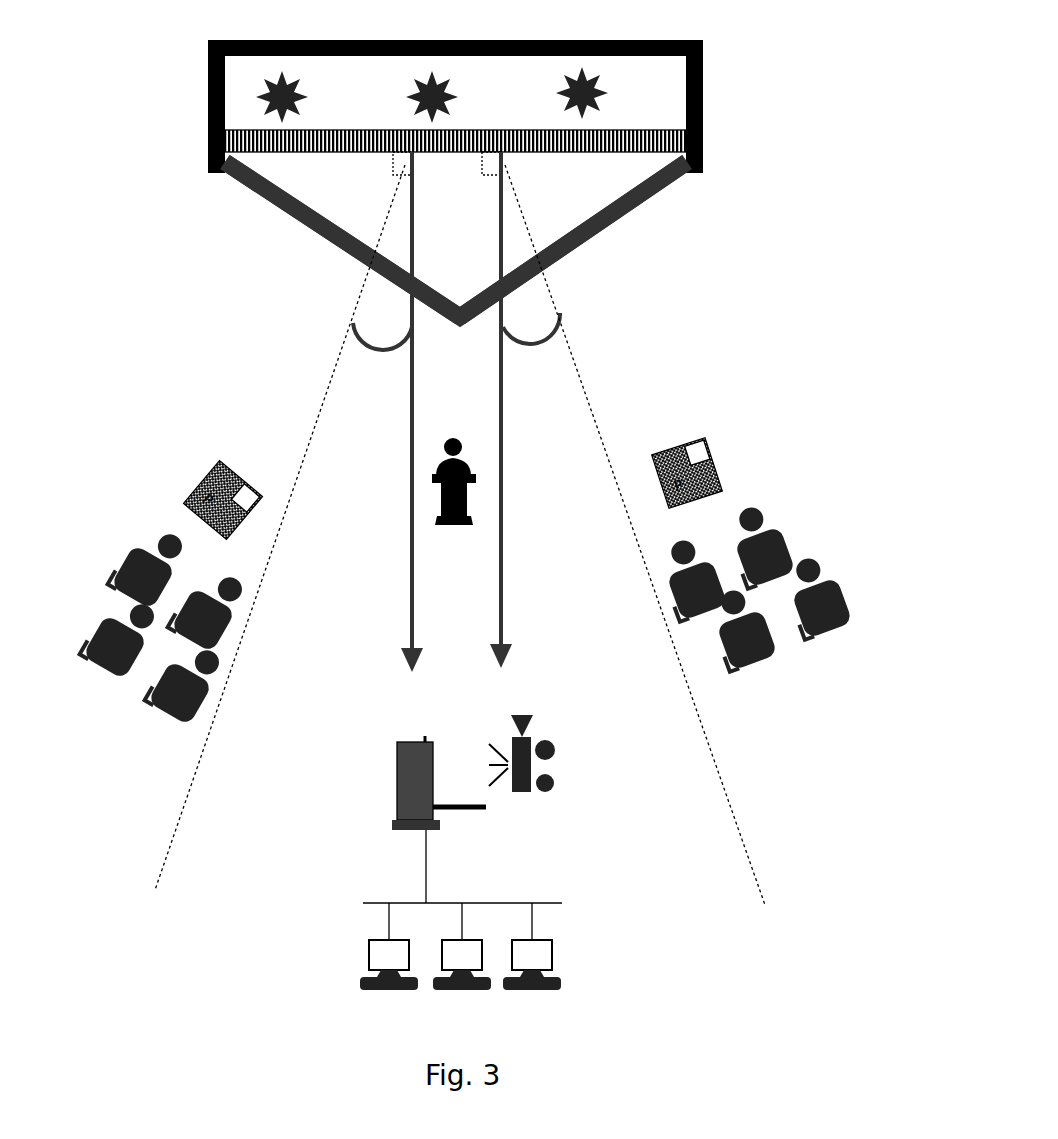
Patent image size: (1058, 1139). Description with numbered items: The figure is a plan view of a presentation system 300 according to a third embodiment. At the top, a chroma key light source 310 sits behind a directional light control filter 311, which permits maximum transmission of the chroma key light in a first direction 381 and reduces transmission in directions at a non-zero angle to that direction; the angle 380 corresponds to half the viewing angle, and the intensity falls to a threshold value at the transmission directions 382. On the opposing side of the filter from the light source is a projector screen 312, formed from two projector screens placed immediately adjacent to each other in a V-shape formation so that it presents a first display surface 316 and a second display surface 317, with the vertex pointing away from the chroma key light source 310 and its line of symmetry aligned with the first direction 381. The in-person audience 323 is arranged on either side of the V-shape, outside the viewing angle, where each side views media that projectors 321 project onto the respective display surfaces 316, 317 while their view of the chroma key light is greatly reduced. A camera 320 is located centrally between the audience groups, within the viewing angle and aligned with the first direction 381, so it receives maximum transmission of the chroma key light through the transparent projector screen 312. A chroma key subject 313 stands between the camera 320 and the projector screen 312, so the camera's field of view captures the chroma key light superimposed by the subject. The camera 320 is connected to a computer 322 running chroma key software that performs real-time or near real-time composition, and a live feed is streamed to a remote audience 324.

The presentation system 300 is at (455, 93).
The chroma key light source 310 is at (457, 97).
The directional light control filter 311 is at (573, 130).
The projector screen 312 is at (575, 213).
The chroma key subject 313 is at (477, 472).
The first display surface 316 is at (307, 228).
The second display surface 317 is at (568, 243).
The camera 320 is at (555, 780).
The projectors 321 is at (198, 483).
The computer 322 is at (397, 792).
The in-person audience 323 is at (140, 550).
The remote audience 324 is at (380, 950).
The angle 380 is at (370, 345).
The first direction 381 is at (410, 600).
The transmission directions 382 is at (240, 648).